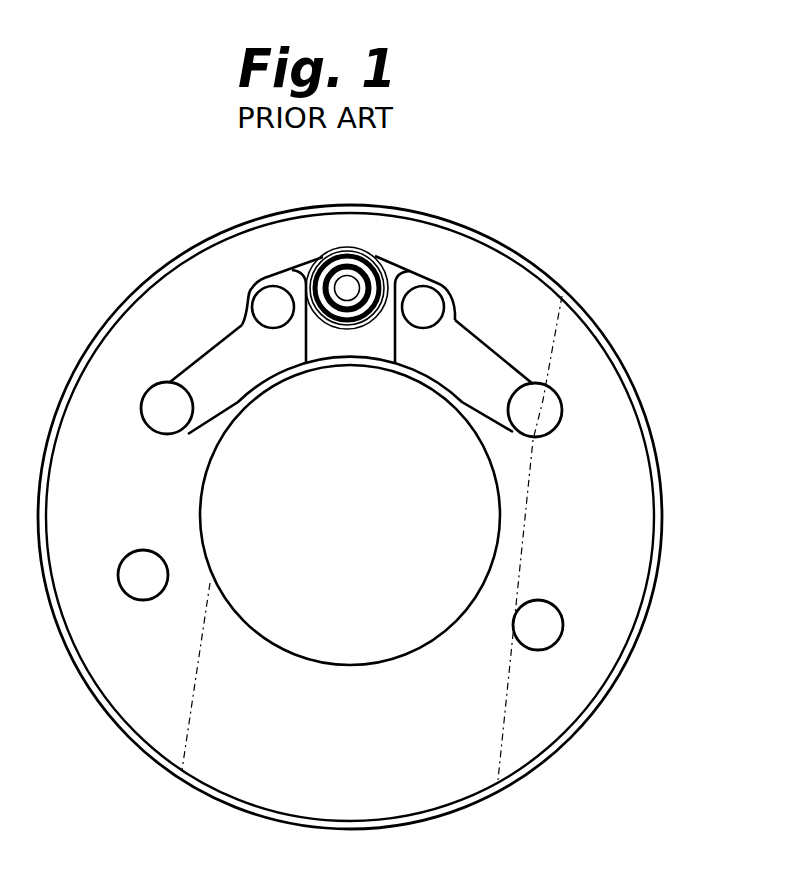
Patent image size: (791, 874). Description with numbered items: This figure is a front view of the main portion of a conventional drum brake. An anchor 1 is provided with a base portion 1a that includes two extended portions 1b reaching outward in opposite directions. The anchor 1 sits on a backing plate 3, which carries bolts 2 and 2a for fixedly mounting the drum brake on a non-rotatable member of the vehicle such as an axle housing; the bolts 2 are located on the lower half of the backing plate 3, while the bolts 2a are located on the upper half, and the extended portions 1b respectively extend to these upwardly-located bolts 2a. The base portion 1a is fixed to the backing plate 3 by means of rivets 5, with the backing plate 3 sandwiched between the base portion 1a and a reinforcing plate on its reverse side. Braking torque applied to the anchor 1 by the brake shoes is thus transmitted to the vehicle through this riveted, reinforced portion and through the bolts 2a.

The anchor 1 is at (334, 305).
The base portion 1a is at (243, 325).
The extended portions 1b is at (214, 354).
The bolts 2 is at (283, 183).
The bolts 2a is at (143, 410).
The backing plate 3 is at (642, 497).
The rivets 5 is at (263, 297).